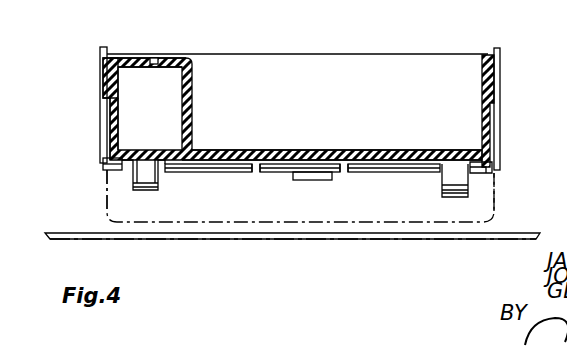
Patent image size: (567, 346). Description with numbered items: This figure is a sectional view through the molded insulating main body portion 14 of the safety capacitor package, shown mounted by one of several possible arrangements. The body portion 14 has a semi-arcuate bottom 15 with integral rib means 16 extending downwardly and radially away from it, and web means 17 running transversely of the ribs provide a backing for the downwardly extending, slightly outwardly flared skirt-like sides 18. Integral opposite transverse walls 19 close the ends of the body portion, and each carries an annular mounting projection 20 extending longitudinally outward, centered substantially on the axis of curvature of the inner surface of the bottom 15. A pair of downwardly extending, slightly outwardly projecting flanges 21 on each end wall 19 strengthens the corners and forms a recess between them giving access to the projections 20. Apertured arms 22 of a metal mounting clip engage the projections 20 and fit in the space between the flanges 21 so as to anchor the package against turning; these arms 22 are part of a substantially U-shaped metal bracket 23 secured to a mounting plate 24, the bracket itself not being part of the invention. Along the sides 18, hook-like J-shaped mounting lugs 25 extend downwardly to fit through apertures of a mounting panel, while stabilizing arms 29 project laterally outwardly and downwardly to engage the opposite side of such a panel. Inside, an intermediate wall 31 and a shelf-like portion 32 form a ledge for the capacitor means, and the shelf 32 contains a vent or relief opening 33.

The main body portion 14 is at (282, 63).
The semi-arcuate bottom 15 is at (236, 150).
The rib means 16 is at (210, 172).
The web means 17 is at (257, 172).
The sides 18 is at (191, 173).
The transverse walls 19 is at (112, 117).
The annular mounting projections 20 is at (105, 90).
The flanges 21 is at (103, 157).
The apertured arms 22 is at (105, 183).
The U-shaped metal bracket 23 is at (365, 226).
The mounting plate 24 is at (332, 240).
The J-shaped mounting lugs 25 is at (155, 188).
The stabilizing arms 29 is at (315, 180).
The intermediate wall 31 is at (187, 93).
The shelf-like portion 32 is at (140, 62).
The vent opening 33 is at (154, 62).